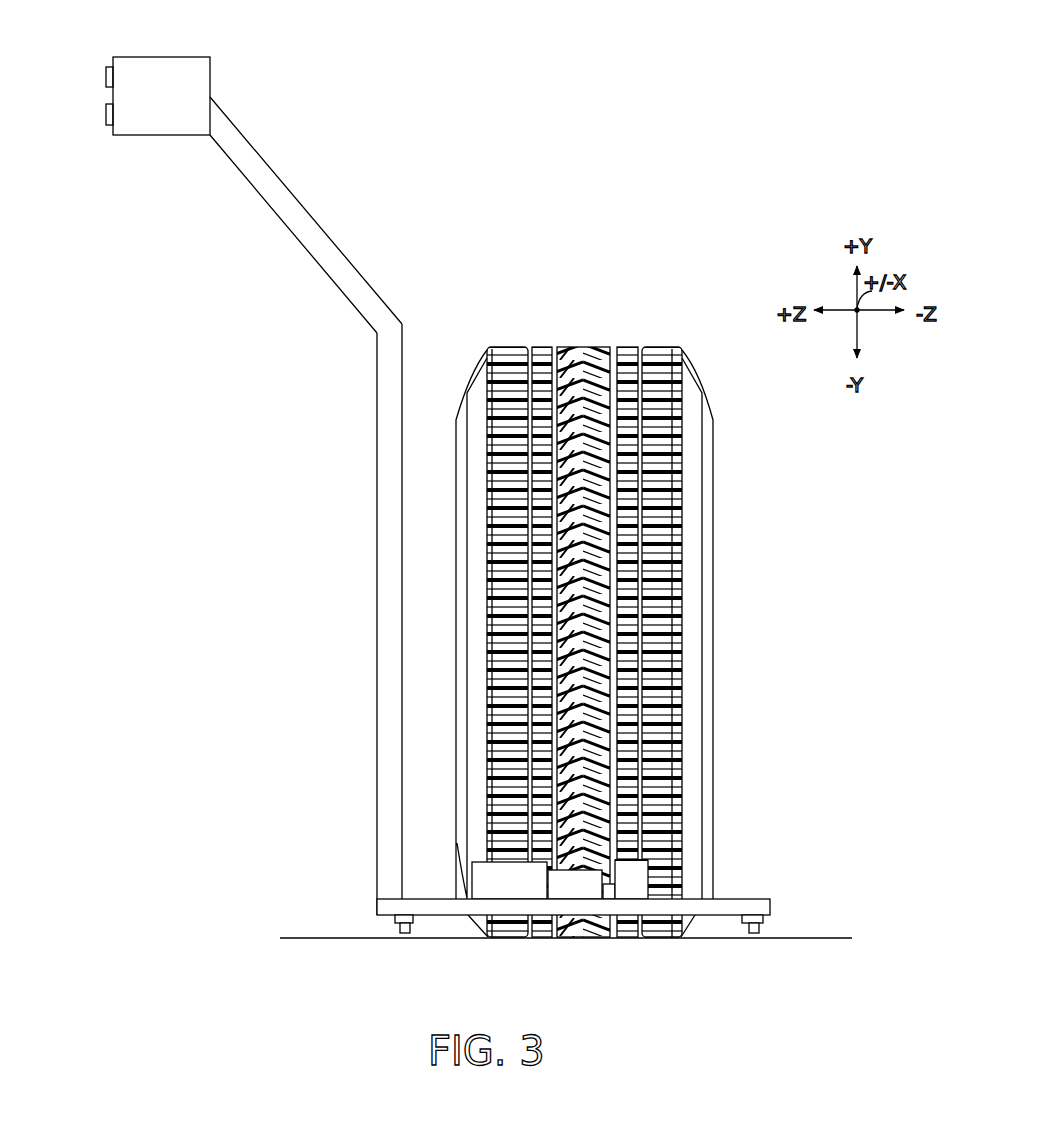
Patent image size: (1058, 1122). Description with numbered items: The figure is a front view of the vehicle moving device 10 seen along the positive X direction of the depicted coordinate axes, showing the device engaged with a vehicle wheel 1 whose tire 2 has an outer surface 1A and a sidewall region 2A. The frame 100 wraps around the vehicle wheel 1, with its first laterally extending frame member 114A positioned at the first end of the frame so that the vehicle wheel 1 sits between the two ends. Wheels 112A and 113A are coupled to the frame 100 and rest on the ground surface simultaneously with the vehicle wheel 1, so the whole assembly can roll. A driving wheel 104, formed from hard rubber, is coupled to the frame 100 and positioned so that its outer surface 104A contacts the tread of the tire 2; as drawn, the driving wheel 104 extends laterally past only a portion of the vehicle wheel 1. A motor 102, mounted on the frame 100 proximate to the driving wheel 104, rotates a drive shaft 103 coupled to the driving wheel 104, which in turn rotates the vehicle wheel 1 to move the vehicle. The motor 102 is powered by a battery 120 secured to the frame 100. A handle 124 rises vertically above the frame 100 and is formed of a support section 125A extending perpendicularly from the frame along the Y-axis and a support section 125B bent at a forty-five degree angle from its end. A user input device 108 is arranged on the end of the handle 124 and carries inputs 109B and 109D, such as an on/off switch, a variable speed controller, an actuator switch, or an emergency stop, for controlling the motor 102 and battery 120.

The vehicle wheel 1 is at (491, 308).
The outer surface of the vehicle wheel 1A is at (625, 347).
The tire 2 is at (690, 374).
The sidewall shoulder 2A is at (636, 852).
The vehicle moving device 10 is at (660, 172).
The frame 100 is at (446, 919).
The motor 102 is at (573, 900).
The drive shaft 103 is at (606, 899).
The driving wheel 104 is at (649, 883).
The outer surface of the driving wheel 104A is at (648, 858).
The user input device 108 is at (160, 57).
The input 109B is at (106, 78).
The input 109D is at (106, 114).
The wheel 112A is at (395, 918).
The wheel 113A is at (765, 918).
The first laterally extending frame member 114A is at (772, 907).
The battery 120 is at (485, 862).
The handle 124 is at (374, 553).
The support section 125A is at (377, 422).
The support section 125B is at (305, 208).